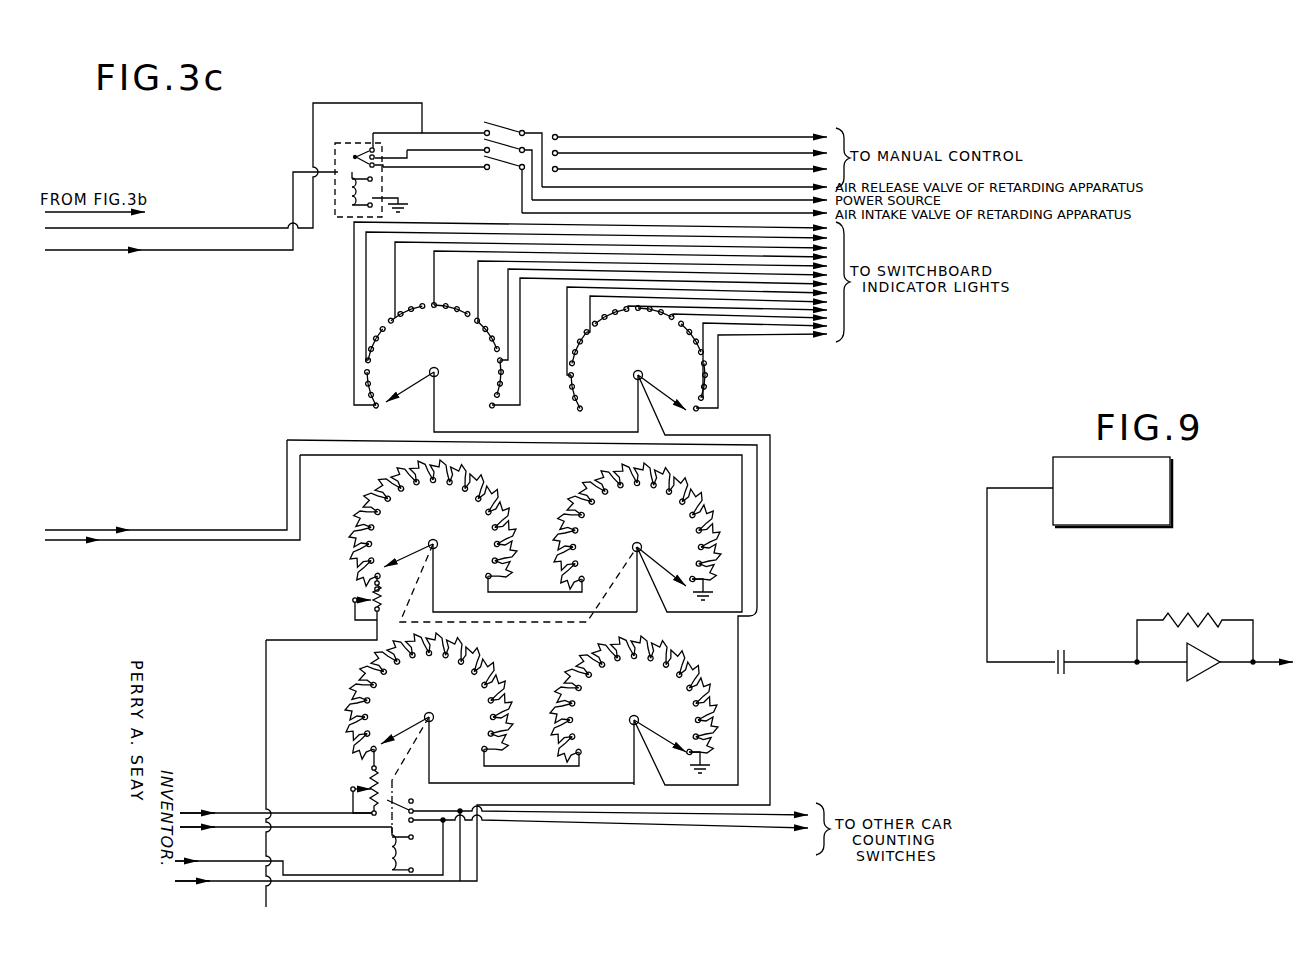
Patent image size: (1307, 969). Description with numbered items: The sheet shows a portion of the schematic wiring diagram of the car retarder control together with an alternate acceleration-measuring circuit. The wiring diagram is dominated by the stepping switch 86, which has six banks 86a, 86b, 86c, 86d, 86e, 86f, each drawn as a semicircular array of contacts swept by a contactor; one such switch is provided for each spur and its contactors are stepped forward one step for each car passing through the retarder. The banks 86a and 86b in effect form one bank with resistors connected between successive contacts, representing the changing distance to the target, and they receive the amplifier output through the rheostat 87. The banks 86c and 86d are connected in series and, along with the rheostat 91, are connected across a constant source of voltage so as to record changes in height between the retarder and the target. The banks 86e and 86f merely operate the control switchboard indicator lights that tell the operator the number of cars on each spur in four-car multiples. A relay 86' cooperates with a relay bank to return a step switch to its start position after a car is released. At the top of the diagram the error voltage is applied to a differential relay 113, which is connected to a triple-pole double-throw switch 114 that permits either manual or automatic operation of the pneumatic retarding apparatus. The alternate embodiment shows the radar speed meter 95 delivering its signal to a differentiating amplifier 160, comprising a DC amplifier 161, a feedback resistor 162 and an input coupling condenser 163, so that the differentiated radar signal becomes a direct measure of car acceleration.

In FIG. 3c, the differential relay 113 is at (358, 140).
In FIG. 3c, the triple-pole double-throw switch 114 is at (500, 128).
In FIG. 3c, the switch bank 86a is at (450, 701).
In FIG. 3c, the switch bank 86b is at (650, 703).
In FIG. 3c, the switch bank 86c is at (452, 524).
In FIG. 3c, the switch bank 86d is at (656, 526).
In FIG. 3c, the switch bank 86e is at (452, 355).
In FIG. 3c, the switch bank 86f is at (654, 355).
In FIG. 3c, the rheostat 91 is at (376, 602).
In FIG. 3c, the stepping switch 86 is at (340, 765).
In FIG. 3c, the rheostat 87 is at (372, 789).
In FIG. 3c, the relay 86' is at (368, 849).
In FIG. 9, the radar speed meter 95 is at (1170, 514).
In FIG. 9, the differentiating amplifier 160 is at (1158, 668).
In FIG. 9, the DC amplifier 161 is at (1203, 676).
In FIG. 9, the feedback resistor 162 is at (1193, 618).
In FIG. 9, the input coupling condenser 163 is at (1058, 653).